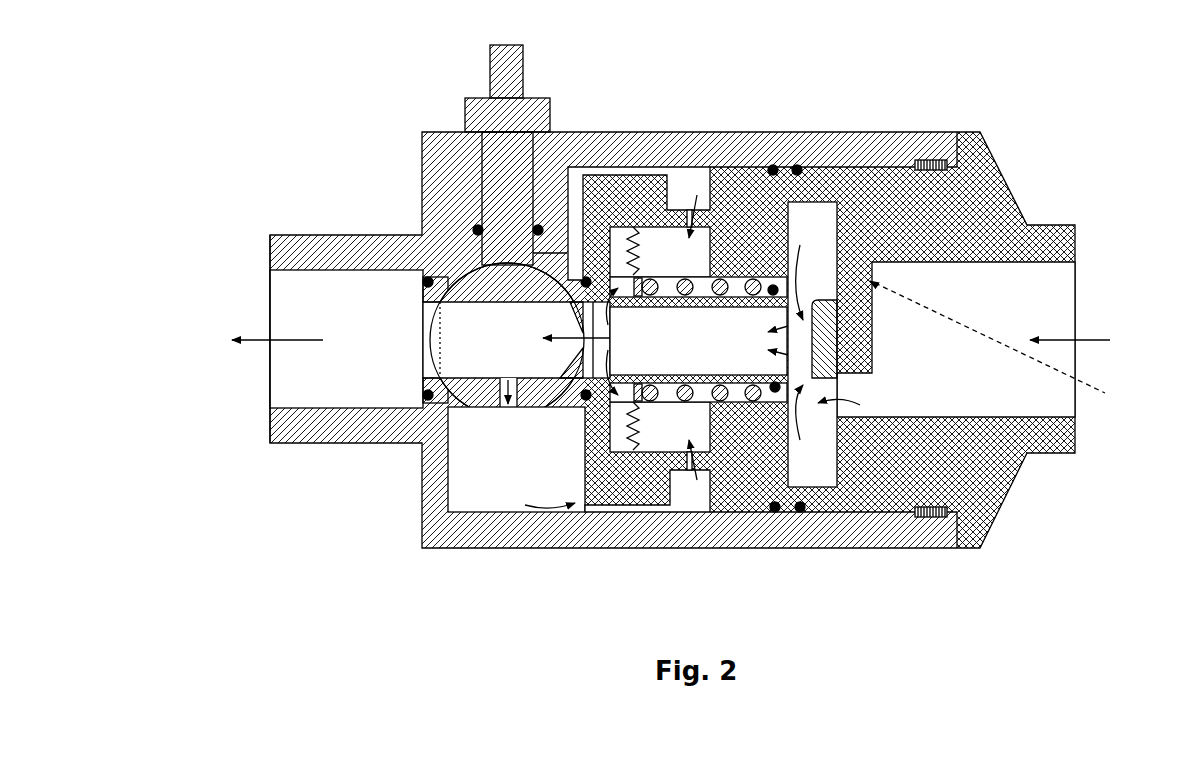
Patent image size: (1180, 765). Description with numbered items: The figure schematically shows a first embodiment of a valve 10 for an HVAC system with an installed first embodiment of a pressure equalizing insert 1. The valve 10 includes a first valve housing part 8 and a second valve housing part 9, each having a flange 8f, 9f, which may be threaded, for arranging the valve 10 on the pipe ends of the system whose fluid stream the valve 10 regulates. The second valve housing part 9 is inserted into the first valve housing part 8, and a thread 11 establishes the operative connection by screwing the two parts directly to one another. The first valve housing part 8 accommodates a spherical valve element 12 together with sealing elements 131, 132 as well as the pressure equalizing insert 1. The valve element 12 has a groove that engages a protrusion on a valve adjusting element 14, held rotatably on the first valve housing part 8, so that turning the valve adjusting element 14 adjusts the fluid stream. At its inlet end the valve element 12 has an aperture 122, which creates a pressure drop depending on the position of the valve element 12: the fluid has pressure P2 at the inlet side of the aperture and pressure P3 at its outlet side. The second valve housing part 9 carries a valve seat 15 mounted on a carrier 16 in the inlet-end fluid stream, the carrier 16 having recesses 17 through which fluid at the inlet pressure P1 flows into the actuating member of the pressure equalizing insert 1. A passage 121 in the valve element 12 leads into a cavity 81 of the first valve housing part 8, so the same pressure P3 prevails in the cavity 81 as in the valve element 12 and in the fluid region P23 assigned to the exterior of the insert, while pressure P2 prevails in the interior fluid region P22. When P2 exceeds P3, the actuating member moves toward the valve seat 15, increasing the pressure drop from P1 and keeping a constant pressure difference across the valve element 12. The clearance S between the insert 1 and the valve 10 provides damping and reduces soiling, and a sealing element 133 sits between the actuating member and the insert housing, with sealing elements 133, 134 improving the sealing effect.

The pressure equalizing insert 1 is at (573, 470).
The first valve housing part 8 is at (300, 235).
The flange 8f is at (262, 244).
The second valve housing part 9 is at (973, 267).
The flange 9f is at (1085, 246).
The valve 10 is at (670, 331).
The thread 11 is at (935, 152).
The valve element 12 is at (418, 306).
The valve adjusting element 14 is at (467, 133).
The valve seat 15 is at (818, 270).
The carrier 16 is at (862, 270).
The recesses 17 is at (857, 400).
The cavity 81 is at (480, 472).
The passage 121 is at (493, 417).
The aperture 122 is at (570, 348).
The sealing element 131 is at (580, 283).
The sealing element 132 is at (428, 283).
The sealing element 133 is at (773, 290).
The sealing element 134 is at (773, 172).
The pressure P1 is at (1017, 305).
The pressure P2 is at (705, 341).
The pressure P3 is at (559, 398).
The interior fluid region P22 is at (620, 243).
The fluid region P23 is at (660, 262).
The clearance S is at (618, 508).